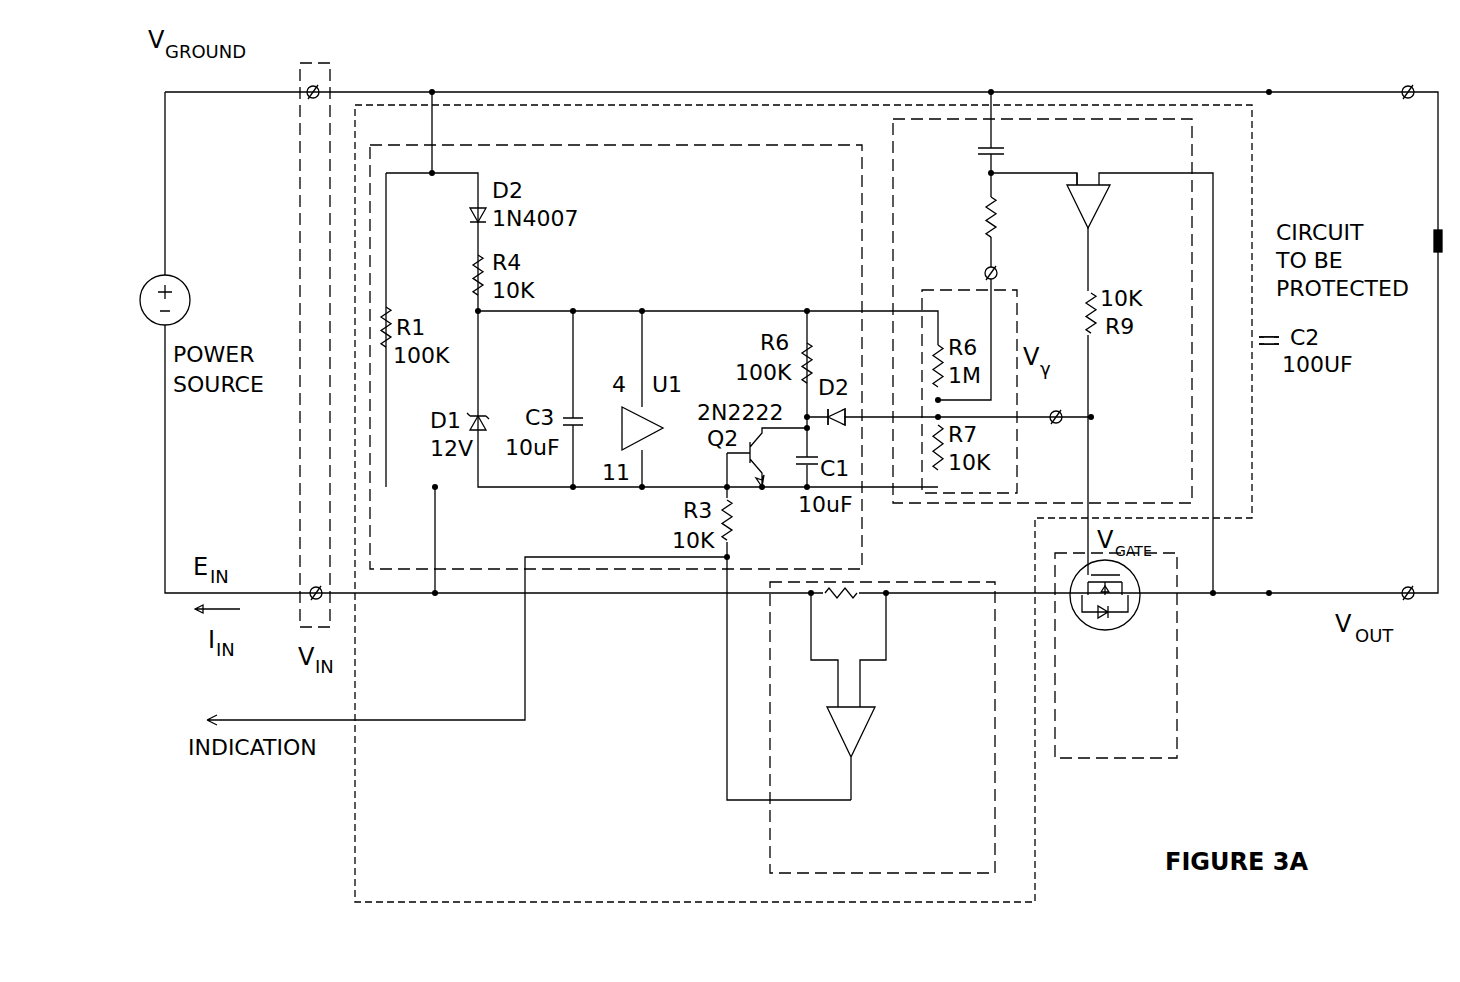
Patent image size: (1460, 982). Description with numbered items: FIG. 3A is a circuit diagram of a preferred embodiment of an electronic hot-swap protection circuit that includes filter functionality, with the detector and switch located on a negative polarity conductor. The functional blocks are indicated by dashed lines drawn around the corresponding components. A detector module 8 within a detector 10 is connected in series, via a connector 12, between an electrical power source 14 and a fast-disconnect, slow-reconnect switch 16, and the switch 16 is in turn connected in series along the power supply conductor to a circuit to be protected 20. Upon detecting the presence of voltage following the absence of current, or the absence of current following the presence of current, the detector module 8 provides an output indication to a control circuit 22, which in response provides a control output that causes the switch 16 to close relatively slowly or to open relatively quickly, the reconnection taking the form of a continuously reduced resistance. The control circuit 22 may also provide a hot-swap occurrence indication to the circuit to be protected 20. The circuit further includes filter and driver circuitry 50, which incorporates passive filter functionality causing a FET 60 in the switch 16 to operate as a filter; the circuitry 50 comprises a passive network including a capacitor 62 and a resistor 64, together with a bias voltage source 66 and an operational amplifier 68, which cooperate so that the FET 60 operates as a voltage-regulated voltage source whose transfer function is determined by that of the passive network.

The detector module 8 is at (770, 845).
The detector 10 is at (357, 830).
The connector 12 is at (295, 78).
The electrical power source 14 is at (182, 276).
The fast-disconnect, slow-reconnect switch 16 is at (1172, 760).
The circuit to be protected 20 is at (1438, 232).
The control circuit 22 is at (768, 146).
The filter and driver circuitry 50 is at (1180, 120).
The FET 60 is at (1106, 631).
The capacitor 62 is at (1000, 150).
The resistor 64 is at (998, 220).
The bias voltage source 66 is at (1018, 306).
The operational amplifier 68 is at (1098, 222).